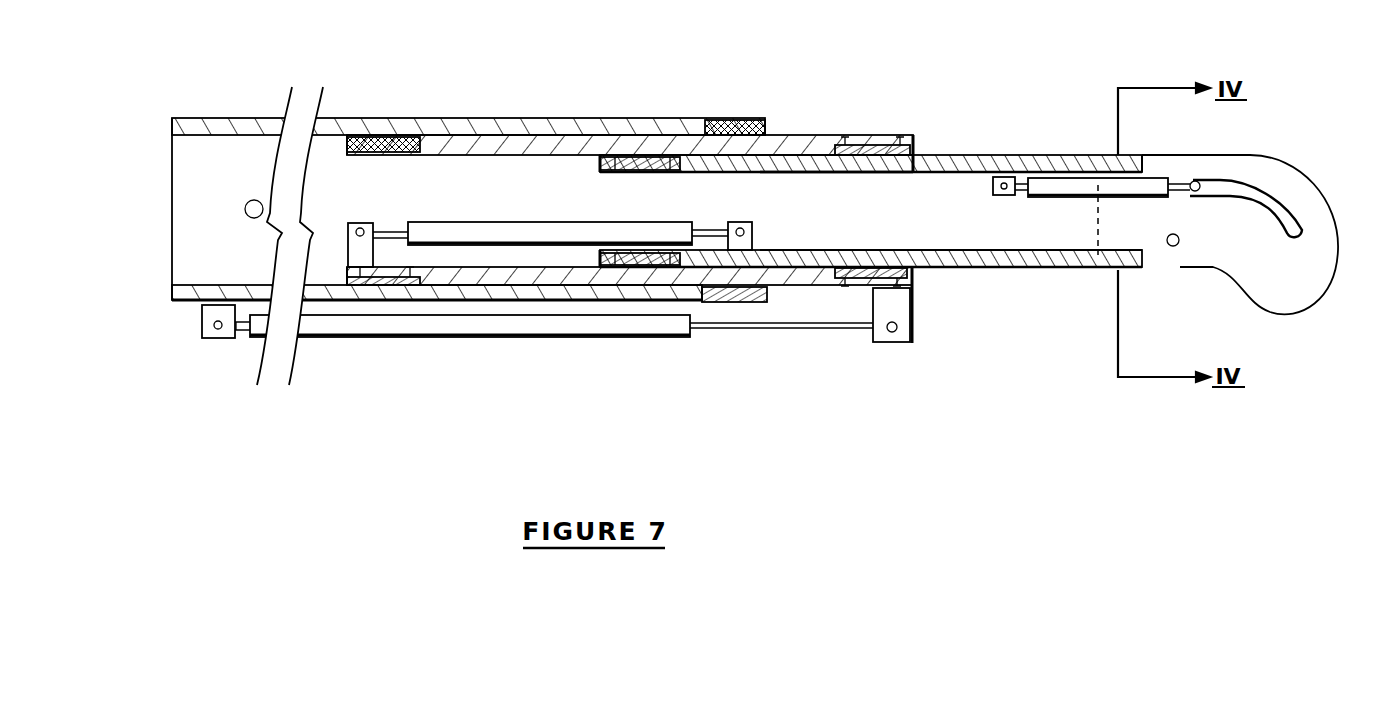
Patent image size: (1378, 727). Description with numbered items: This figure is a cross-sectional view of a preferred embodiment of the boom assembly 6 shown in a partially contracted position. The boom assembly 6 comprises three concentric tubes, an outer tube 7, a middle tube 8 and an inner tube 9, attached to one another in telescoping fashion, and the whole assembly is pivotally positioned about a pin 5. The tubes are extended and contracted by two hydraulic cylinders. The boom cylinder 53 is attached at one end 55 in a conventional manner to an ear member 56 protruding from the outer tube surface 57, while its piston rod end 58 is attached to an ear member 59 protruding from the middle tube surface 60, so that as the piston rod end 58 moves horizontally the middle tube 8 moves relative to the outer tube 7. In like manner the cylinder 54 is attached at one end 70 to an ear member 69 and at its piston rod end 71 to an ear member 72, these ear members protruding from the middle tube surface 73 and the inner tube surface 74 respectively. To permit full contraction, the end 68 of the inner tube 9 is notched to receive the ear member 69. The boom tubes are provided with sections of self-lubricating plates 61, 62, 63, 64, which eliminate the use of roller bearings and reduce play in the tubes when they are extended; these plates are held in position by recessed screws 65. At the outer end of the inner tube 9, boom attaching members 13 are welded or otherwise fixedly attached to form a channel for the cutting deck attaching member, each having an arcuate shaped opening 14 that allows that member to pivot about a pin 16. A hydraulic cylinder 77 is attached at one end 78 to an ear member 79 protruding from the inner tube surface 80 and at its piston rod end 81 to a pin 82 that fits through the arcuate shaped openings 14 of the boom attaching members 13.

The pin 5 is at (250, 215).
The boom assembly 6 is at (582, 73).
The outer tube 7 is at (630, 118).
The middle tube 8 is at (790, 150).
The inner tube 9 is at (940, 162).
The boom attaching members 13 is at (1150, 162).
The arcuate shaped opening 14 is at (1282, 210).
The pin 16 is at (1172, 270).
The boom cylinder 53 is at (510, 337).
The cylinder 54 is at (485, 235).
The one end 55 is at (243, 332).
The ear member 56 is at (202, 332).
The outer tube surface 57 is at (185, 298).
The piston rod end 58 is at (840, 330).
The ear member 59 is at (912, 325).
The middle tube surface 60 is at (866, 283).
The self-lubricating plate 61 is at (767, 292).
The self-lubricating plate 62 is at (348, 278).
The self-lubricating plate 63 is at (915, 272).
The self-lubricating plate 64 is at (600, 258).
The recessed screws 65 is at (865, 145).
The end of inner tube 68 is at (595, 248).
The ear member 69 is at (349, 226).
The one end 70 is at (390, 233).
The piston rod end 71 is at (712, 232).
The ear member 72 is at (755, 233).
The middle tube surface 73 is at (405, 278).
The inner tube surface 74 is at (822, 250).
The hydraulic cylinder 77 is at (1085, 190).
The one end 78 is at (1028, 192).
The ear member 79 is at (993, 185).
The inner tube surface 80 is at (930, 175).
The piston rod end 81 is at (1182, 190).
The pin 82 is at (1198, 181).